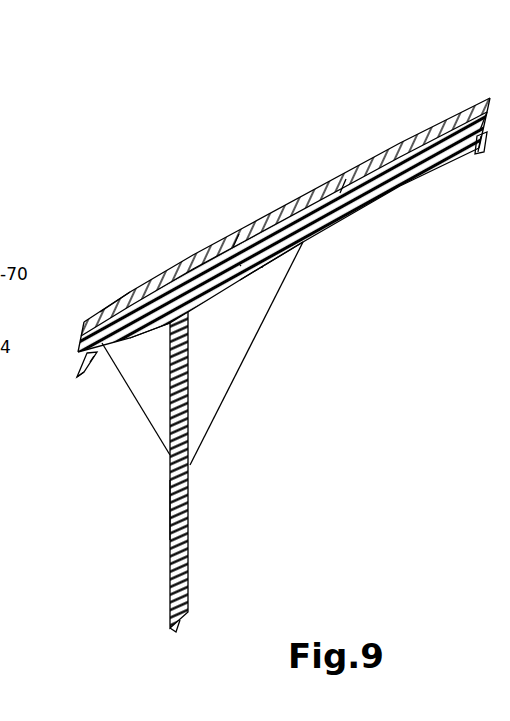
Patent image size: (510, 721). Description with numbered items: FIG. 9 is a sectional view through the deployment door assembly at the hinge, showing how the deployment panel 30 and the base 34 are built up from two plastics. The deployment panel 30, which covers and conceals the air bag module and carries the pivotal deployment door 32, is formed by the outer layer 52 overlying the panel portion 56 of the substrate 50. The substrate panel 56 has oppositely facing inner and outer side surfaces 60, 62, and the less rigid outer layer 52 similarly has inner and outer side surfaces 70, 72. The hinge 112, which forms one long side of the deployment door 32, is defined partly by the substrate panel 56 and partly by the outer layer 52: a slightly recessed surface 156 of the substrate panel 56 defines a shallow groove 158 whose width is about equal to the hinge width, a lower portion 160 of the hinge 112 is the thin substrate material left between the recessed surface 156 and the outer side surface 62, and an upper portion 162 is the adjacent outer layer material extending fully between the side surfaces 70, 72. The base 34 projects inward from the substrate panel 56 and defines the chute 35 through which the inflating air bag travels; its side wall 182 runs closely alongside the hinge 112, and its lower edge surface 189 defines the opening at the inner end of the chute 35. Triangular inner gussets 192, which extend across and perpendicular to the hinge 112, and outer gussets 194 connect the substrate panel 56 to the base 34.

The deployment panel 30 is at (259, 243).
The deployment door 32 is at (348, 172).
The base 34 is at (136, 491).
The chute 35 is at (239, 502).
The substrate 50 is at (70, 367).
The outer layer 52 is at (74, 330).
The panel portion of the substrate 56 is at (97, 363).
The inner side surface of the substrate panel 60 is at (147, 338).
The outer side surface of the substrate panel 62 is at (118, 302).
The inner side surface of the outer layer 70 is at (478, 152).
The outer side surface of the outer layer 72 is at (483, 105).
The hinge 112 is at (238, 224).
The recessed surface 156 is at (240, 266).
The groove 158 is at (268, 274).
The lower portion of the hinge 160 is at (262, 248).
The upper portion of the hinge 162 is at (256, 234).
The side wall 182 is at (170, 508).
The lower edge surface 189 is at (180, 623).
The inner gussets 192 is at (208, 398).
The outer gussets 194 is at (152, 397).